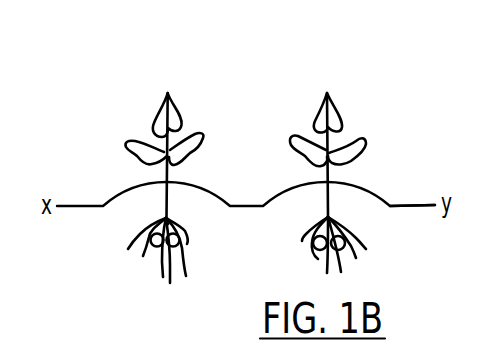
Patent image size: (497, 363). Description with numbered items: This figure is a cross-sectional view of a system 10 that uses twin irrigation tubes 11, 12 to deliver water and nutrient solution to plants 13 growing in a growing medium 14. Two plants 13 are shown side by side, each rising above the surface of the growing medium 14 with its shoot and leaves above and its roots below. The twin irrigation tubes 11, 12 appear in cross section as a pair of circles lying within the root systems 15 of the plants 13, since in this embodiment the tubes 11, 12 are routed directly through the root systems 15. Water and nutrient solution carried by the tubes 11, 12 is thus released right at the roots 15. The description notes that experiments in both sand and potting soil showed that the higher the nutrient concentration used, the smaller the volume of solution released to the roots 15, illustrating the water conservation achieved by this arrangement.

The system 10 is at (268, 98).
The irrigation tube 11 is at (164, 277).
The irrigation tube 12 is at (186, 257).
The plant 13 is at (340, 118).
The growing medium 14 is at (415, 248).
The root system 15 is at (170, 224).